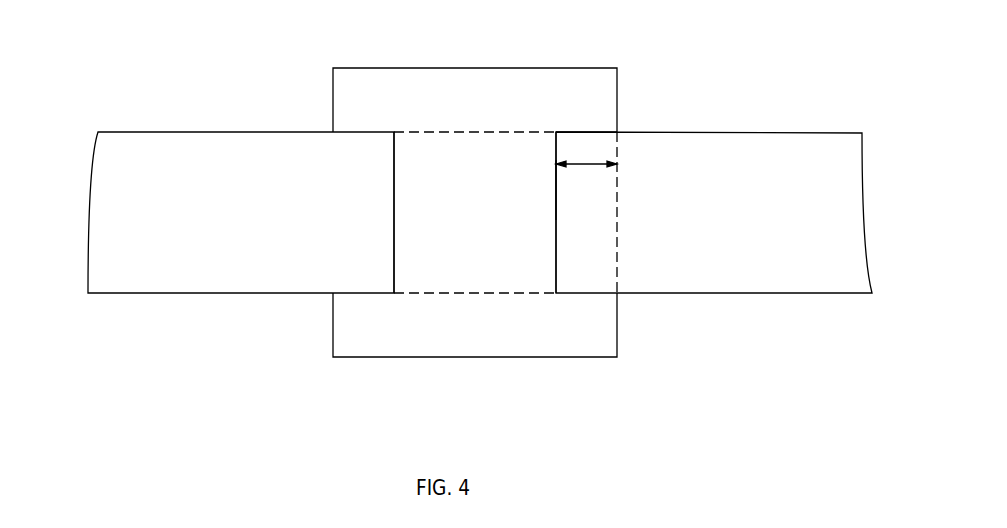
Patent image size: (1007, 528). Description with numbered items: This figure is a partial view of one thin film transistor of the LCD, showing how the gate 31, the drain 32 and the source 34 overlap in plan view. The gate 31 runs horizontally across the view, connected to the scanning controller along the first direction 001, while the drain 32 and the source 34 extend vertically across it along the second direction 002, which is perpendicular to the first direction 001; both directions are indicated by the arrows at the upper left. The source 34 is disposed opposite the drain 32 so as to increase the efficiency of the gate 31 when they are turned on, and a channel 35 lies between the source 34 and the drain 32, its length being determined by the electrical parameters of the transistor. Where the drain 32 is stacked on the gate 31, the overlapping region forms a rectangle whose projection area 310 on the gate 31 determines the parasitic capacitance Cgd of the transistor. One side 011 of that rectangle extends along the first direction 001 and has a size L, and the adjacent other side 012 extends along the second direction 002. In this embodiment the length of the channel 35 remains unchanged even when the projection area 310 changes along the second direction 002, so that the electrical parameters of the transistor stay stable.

The first direction 001 is at (42, 95).
The second direction 002 is at (42, 95).
The side of the rectangle 011 is at (590, 130).
The other side of the rectangle 012 is at (555, 212).
The size of the side L is at (587, 162).
The gate 31 is at (538, 327).
The projection area 310 is at (590, 192).
The drain 32 is at (728, 230).
The source 34 is at (242, 242).
The channel 35 is at (466, 205).